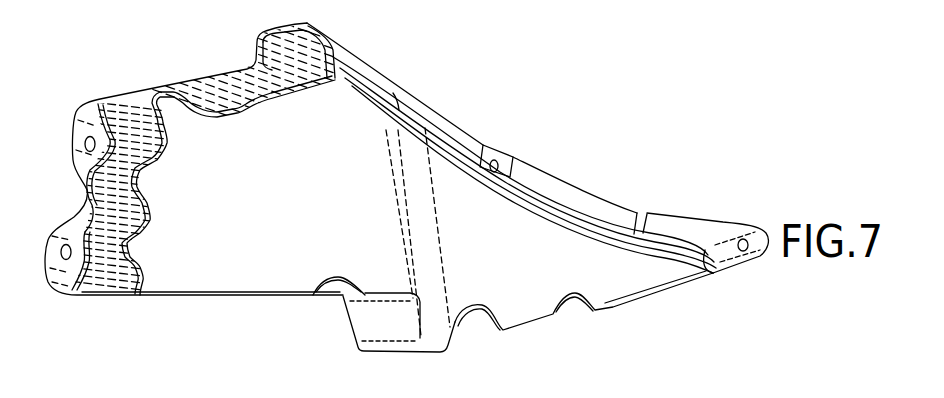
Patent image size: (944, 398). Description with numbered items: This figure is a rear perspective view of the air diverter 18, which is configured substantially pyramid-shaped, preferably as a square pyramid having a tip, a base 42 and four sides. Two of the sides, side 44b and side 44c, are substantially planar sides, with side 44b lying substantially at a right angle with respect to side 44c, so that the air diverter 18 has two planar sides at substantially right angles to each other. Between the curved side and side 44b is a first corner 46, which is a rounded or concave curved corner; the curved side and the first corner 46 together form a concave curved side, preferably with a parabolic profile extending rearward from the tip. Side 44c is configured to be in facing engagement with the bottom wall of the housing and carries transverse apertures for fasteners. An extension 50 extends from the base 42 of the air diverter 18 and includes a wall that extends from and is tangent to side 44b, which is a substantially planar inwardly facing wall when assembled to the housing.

The air diverter 18 is at (519, 67).
The base 42 is at (392, 330).
The side 44b is at (523, 252).
The side 44c is at (613, 303).
The first corner 46 is at (333, 57).
The extension 50 is at (140, 237).